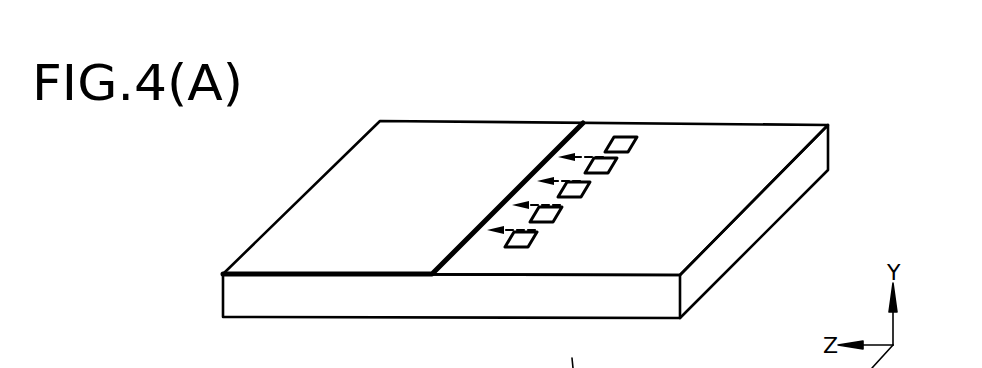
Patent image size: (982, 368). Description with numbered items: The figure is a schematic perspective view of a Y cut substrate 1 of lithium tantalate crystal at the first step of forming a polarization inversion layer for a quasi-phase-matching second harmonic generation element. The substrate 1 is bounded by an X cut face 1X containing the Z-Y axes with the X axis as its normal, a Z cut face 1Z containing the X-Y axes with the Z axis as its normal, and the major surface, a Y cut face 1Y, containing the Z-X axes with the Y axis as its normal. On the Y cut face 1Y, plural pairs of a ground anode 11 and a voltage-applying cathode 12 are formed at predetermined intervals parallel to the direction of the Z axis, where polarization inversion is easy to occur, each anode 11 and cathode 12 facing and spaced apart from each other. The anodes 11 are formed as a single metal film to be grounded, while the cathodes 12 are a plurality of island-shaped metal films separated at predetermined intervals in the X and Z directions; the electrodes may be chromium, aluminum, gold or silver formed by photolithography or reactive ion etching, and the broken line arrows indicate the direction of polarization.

The substrate 1 is at (547, 214).
The ground anode 11 is at (277, 245).
The voltage-applying cathode 12 is at (514, 250).
The X cut face 1X is at (333, 295).
The Y cut face 1Y is at (683, 178).
The Z cut face 1Z is at (788, 214).